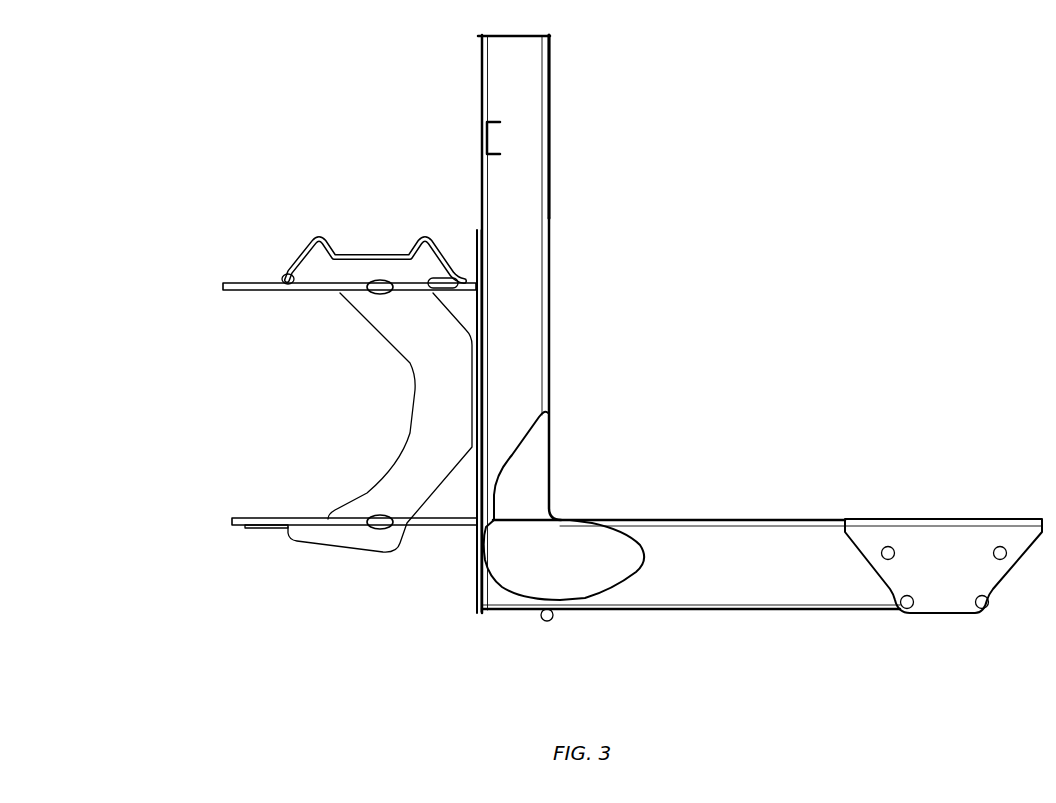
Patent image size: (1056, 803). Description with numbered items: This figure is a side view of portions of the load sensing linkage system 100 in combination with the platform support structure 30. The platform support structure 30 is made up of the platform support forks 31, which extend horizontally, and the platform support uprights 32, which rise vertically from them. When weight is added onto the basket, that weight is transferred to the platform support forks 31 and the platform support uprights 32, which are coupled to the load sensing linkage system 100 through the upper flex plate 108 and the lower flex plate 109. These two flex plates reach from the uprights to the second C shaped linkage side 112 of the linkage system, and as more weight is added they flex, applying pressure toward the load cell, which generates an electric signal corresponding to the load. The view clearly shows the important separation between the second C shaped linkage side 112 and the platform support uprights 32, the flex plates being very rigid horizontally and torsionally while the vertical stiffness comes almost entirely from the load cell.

The platform support structure 30 is at (843, 304).
The platform support forks 31 is at (730, 580).
The platform support uprights 32 is at (527, 130).
The load sensing linkage system 100 is at (332, 183).
The upper flex plate 108 is at (240, 292).
The lower flex plate 109 is at (440, 528).
The second C shaped linkage side 112 is at (430, 358).